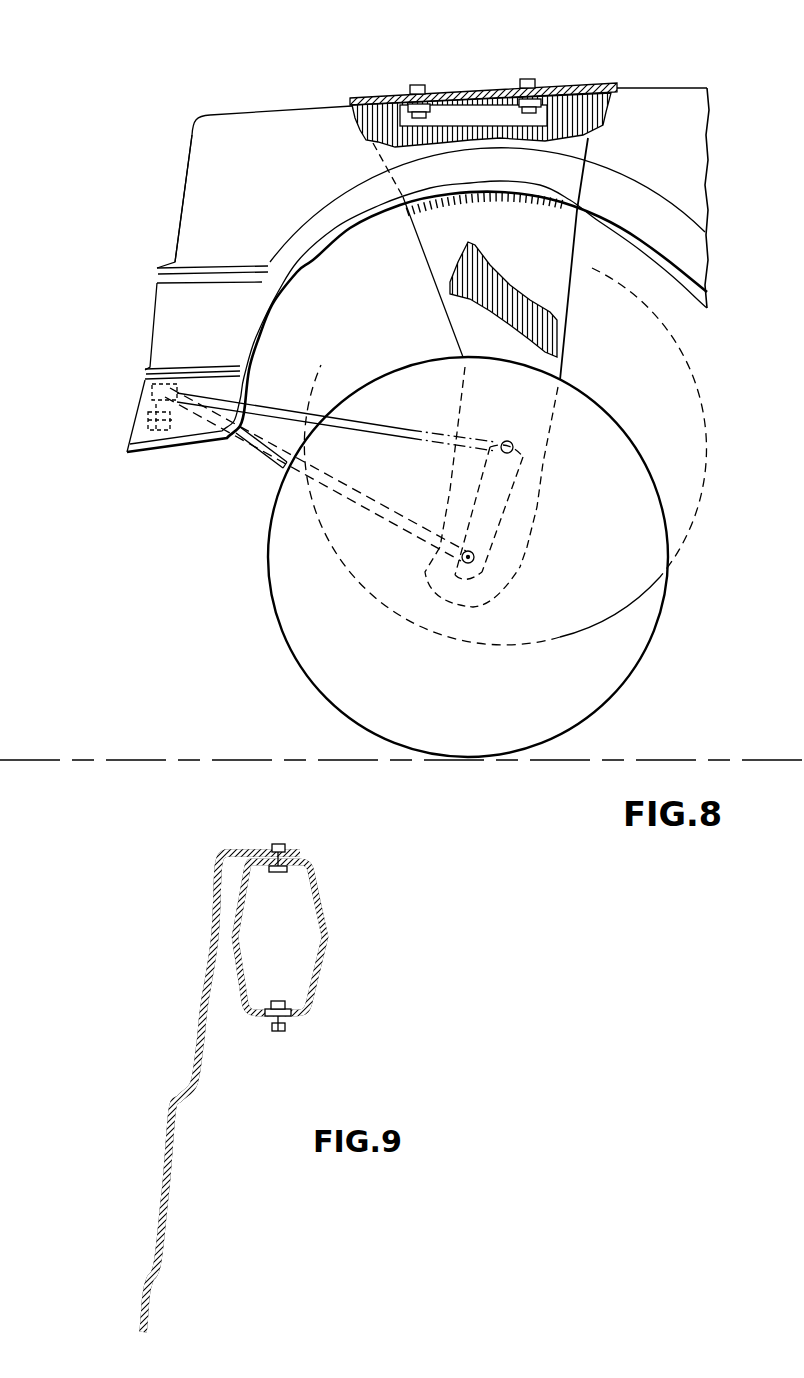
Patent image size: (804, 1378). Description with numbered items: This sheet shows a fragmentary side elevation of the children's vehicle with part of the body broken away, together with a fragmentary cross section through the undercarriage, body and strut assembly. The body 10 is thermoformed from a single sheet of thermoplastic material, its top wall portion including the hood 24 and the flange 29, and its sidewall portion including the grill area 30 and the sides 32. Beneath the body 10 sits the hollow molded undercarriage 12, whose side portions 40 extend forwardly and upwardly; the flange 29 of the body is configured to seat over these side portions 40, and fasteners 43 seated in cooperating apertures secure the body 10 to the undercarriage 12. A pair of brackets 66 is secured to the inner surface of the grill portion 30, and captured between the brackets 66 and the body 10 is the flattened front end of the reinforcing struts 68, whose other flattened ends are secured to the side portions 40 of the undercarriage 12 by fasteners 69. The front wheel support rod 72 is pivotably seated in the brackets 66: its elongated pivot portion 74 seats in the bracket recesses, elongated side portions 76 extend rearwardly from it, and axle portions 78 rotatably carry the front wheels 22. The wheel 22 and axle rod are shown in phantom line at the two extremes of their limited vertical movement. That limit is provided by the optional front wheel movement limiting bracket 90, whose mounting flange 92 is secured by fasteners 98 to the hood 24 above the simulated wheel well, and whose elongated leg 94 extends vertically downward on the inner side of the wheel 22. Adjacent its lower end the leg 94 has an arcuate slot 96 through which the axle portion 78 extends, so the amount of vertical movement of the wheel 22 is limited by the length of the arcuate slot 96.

In FIG. 8, the body 10 is at (260, 100).
In FIG. 9, the body 10 is at (198, 939).
In FIG. 9, the undercarriage 12 is at (340, 901).
In FIG. 8, the front wheel 22 is at (628, 610).
In FIG. 8, the hood 24 is at (648, 86).
In FIG. 9, the flange 29 is at (243, 851).
In FIG. 8, the grill area 30 is at (187, 180).
In FIG. 8, the sides 32 is at (690, 146).
In FIG. 9, the sides 32 is at (202, 1022).
In FIG. 9, the side portions 40 is at (331, 962).
In FIG. 9, the fasteners 43 is at (277, 843).
In FIG. 8, the brackets 66 is at (148, 397).
In FIG. 9, the reinforcing struts 68 is at (287, 1027).
In FIG. 9, the fasteners 69 is at (275, 1030).
In FIG. 8, the front wheel support rod 72 is at (244, 463).
In FIG. 8, the pivot portion 74 is at (177, 400).
In FIG. 8, the side portions 76 is at (287, 473).
In FIG. 8, the axle portions 78 is at (463, 564).
In FIG. 8, the front wheel movement limiting bracket 90 is at (578, 320).
In FIG. 8, the mounting flange 92 is at (468, 98).
In FIG. 8, the elongated leg 94 is at (508, 340).
In FIG. 8, the arcuate slot 96 is at (527, 497).
In FIG. 8, the fasteners 98 is at (418, 82).